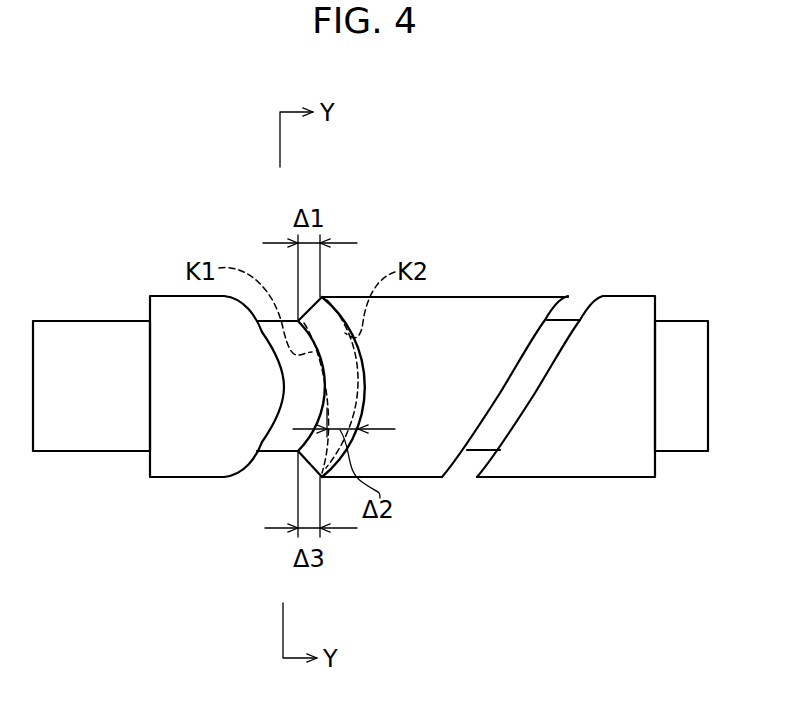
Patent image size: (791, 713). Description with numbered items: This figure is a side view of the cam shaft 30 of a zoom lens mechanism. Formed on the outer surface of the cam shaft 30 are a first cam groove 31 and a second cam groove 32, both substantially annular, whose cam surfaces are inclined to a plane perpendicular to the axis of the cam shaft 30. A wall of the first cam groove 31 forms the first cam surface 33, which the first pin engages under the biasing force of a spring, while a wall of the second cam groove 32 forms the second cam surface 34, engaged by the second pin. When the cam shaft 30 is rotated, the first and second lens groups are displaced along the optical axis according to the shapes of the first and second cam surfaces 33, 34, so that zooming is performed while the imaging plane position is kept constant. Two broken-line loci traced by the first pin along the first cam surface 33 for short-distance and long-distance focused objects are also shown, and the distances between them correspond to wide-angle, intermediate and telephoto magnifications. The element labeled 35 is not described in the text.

The cam shaft 30 is at (543, 493).
The first cam groove 31 is at (262, 478).
The second cam groove 32 is at (586, 294).
The first cam surface 33 is at (324, 328).
The second cam surface 34 is at (457, 461).
The shaft 35 is at (91, 341).